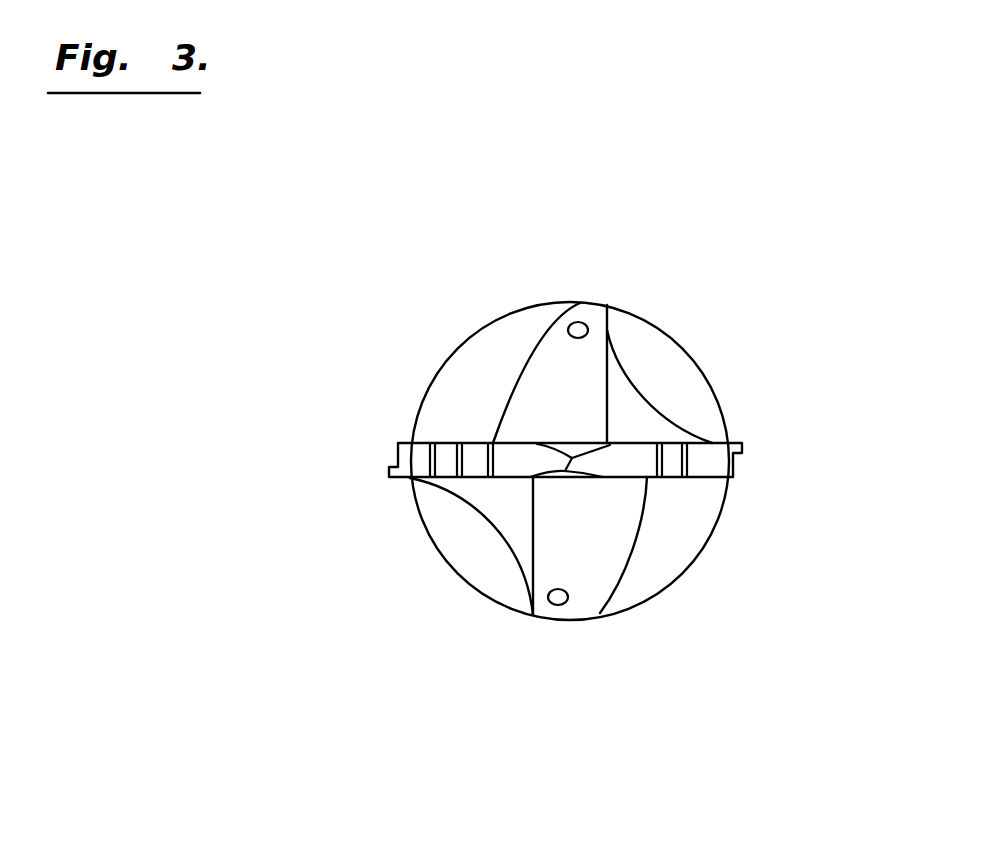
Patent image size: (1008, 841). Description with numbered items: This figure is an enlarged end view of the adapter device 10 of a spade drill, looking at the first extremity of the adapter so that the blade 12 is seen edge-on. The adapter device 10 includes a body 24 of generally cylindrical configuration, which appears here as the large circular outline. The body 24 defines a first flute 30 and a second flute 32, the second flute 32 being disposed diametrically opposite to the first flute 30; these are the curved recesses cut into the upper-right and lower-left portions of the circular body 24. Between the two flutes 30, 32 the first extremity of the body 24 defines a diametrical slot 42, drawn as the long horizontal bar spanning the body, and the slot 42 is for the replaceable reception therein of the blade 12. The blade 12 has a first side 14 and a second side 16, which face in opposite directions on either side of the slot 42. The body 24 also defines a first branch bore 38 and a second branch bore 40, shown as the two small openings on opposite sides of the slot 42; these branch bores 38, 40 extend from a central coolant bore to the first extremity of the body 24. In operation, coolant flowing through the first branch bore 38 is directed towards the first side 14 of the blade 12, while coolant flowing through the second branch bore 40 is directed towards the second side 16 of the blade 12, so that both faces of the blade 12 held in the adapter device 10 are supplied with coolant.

The adapter device 10 is at (485, 352).
The blade 12 is at (630, 455).
The first side 14 is at (628, 480).
The second side 16 is at (515, 443).
The body 24 is at (600, 550).
The first flute 30 is at (498, 522).
The second flute 32 is at (635, 388).
The first branch bore 38 is at (550, 603).
The second branch bore 40 is at (586, 324).
The diametrical slot 42 is at (442, 443).